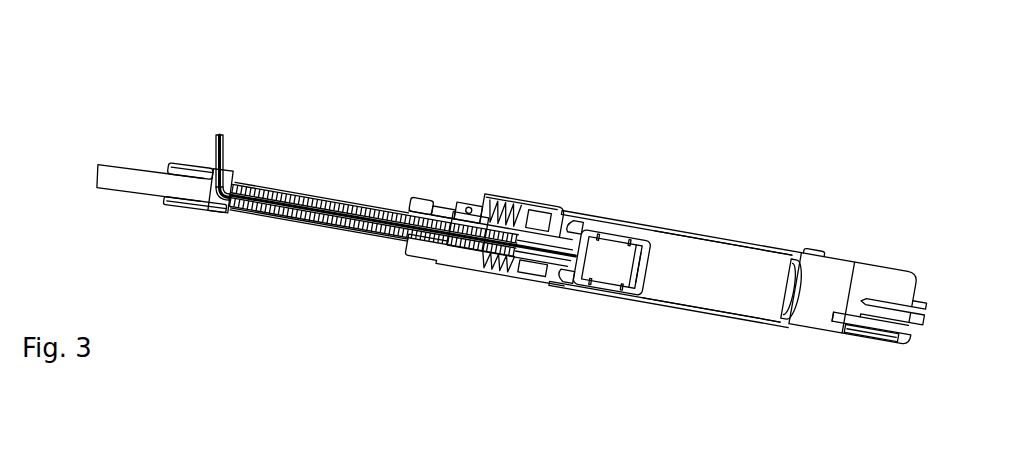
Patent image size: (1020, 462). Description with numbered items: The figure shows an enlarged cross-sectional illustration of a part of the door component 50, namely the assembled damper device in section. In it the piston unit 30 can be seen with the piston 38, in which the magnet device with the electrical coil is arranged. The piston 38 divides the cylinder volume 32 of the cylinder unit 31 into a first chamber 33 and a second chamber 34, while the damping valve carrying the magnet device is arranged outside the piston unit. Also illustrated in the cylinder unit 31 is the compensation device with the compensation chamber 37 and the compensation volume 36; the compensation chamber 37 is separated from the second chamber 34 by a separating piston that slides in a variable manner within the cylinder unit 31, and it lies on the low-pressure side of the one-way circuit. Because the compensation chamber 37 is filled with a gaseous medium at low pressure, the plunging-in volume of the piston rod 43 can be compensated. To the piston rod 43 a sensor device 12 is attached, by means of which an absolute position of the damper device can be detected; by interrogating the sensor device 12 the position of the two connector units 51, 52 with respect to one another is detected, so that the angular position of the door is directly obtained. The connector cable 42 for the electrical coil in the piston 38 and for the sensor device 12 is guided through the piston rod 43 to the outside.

The sensor device 12 is at (313, 203).
The piston unit 30 is at (606, 206).
The cylinder unit 31 is at (761, 252).
The cylinder volume 32 is at (703, 262).
The first chamber 33 is at (551, 273).
The second chamber 34 is at (725, 297).
The compensation volume 36 is at (825, 283).
The compensation chamber 37 is at (795, 289).
The piston 38 is at (610, 273).
The connector cable 42 is at (218, 133).
The piston rod 43 is at (250, 217).
The door component 50 is at (720, 82).
The connector unit 51 is at (120, 177).
The connector unit 52 is at (899, 383).